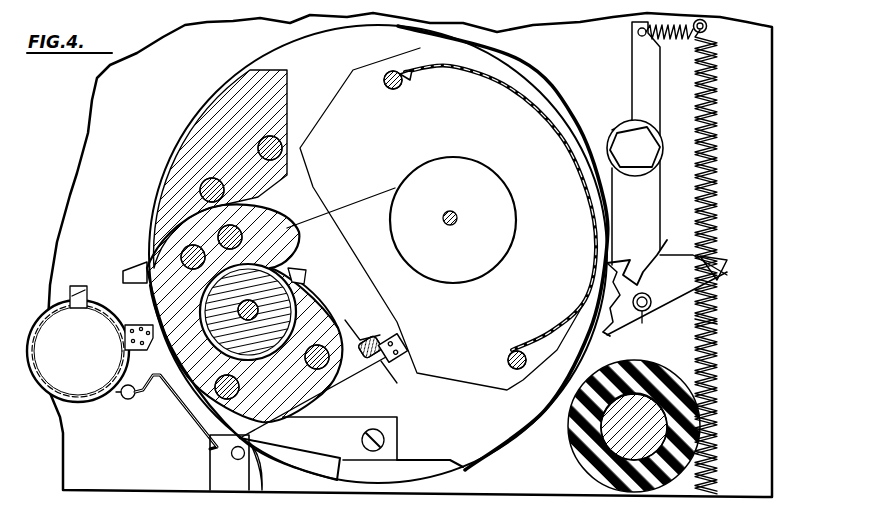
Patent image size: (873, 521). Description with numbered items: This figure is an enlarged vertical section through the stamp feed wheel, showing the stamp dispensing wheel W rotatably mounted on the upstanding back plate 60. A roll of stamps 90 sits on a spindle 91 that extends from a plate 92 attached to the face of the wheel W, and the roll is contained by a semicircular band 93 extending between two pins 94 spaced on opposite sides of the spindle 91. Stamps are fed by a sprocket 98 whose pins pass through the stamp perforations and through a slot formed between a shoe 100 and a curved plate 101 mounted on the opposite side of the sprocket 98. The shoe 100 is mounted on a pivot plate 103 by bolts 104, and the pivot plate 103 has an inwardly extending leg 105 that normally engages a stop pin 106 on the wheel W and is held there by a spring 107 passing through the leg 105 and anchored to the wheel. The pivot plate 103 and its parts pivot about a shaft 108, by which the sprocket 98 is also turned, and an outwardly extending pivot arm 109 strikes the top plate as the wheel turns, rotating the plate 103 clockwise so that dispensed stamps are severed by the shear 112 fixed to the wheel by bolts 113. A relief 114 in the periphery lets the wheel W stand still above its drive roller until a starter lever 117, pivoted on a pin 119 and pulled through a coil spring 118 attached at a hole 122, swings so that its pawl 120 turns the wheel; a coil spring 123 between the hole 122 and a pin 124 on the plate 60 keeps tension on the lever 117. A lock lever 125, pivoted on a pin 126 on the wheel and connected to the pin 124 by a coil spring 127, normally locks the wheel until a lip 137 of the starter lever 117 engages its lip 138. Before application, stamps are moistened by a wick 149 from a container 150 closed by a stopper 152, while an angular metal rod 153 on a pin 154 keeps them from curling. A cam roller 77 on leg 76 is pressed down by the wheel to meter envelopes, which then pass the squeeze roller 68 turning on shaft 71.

The back plate 60 is at (180, 38).
The stamp dispensing wheel W is at (424, 27).
The semicircular band 93 is at (497, 89).
The pins 94 is at (390, 88).
The plate 92 is at (490, 384).
The roll of stamps 90 is at (398, 186).
The spindle 91 is at (450, 226).
The shear 112 is at (163, 197).
The bolts 113 is at (168, 173).
The pivot arm 109 is at (128, 270).
The curved plate 101 is at (292, 226).
The bolts 104 is at (194, 252).
The shaft 108 is at (250, 322).
The sprocket 98 is at (311, 292).
The pivot plate 103 is at (303, 263).
The shoe 100 is at (275, 408).
The relief 114 is at (422, 461).
The leg 105 is at (397, 383).
The stop pin 106 is at (368, 339).
The spring 107 is at (392, 330).
The container 150 is at (70, 403).
The stopper 152 is at (88, 276).
The wick 149 is at (140, 325).
The pin 154 is at (128, 399).
The angular metal rod 153 is at (182, 410).
The leg 76 is at (212, 473).
The cam roller 77 is at (258, 490).
The coil spring 123 is at (716, 118).
The pin 124 is at (706, 31).
The coil spring 127 is at (647, 35).
The lock lever 125 is at (640, 204).
The pin 126 is at (620, 137).
The lip 138 is at (645, 265).
The lip 137 is at (628, 258).
The hole 122 is at (723, 264).
The starter lever 117 is at (664, 303).
The coil spring 118 is at (717, 321).
The pin 119 is at (643, 324).
The pawl 120 is at (604, 331).
The squeeze roller 68 is at (575, 470).
The shaft 71 is at (570, 431).